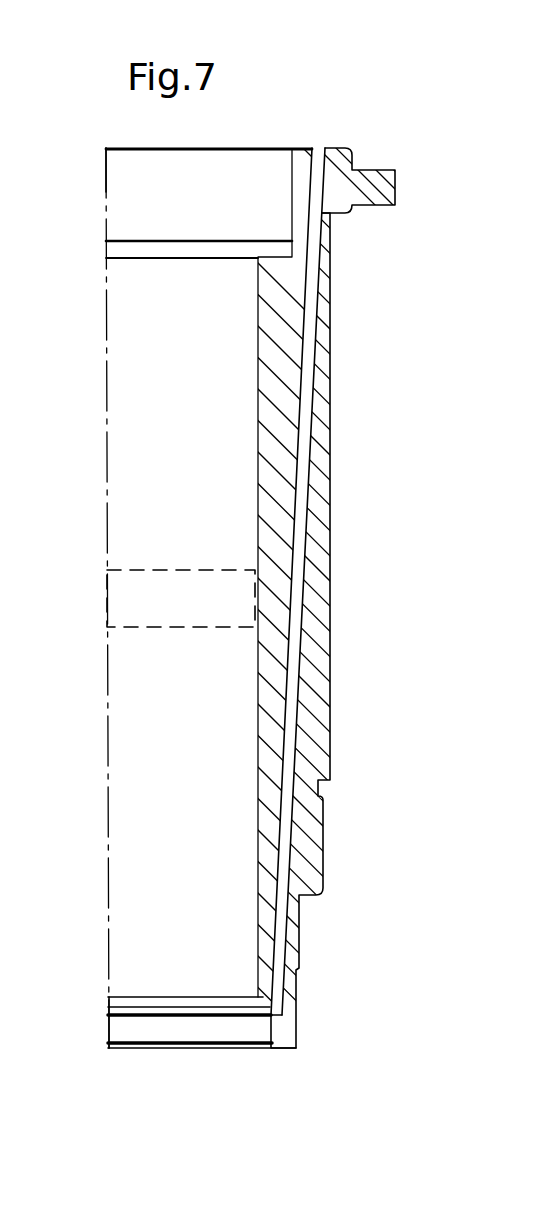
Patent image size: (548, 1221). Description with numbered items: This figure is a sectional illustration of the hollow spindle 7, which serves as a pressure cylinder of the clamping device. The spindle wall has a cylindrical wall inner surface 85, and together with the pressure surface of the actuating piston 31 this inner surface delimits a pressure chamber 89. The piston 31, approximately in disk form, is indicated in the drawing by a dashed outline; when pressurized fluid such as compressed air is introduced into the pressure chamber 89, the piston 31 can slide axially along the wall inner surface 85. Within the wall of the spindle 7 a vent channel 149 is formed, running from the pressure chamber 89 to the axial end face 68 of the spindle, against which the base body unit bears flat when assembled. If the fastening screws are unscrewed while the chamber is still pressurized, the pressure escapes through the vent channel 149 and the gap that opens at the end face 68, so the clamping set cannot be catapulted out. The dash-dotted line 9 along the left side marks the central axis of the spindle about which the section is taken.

The hollow spindle 7 is at (333, 718).
The longitudinal axis 9 is at (109, 839).
The actuating piston 31 is at (137, 628).
The axial end face 68 is at (341, 147).
The wall inner surface 85 is at (260, 733).
The pressure chamber 89 is at (181, 932).
The vent channel 149 is at (300, 498).